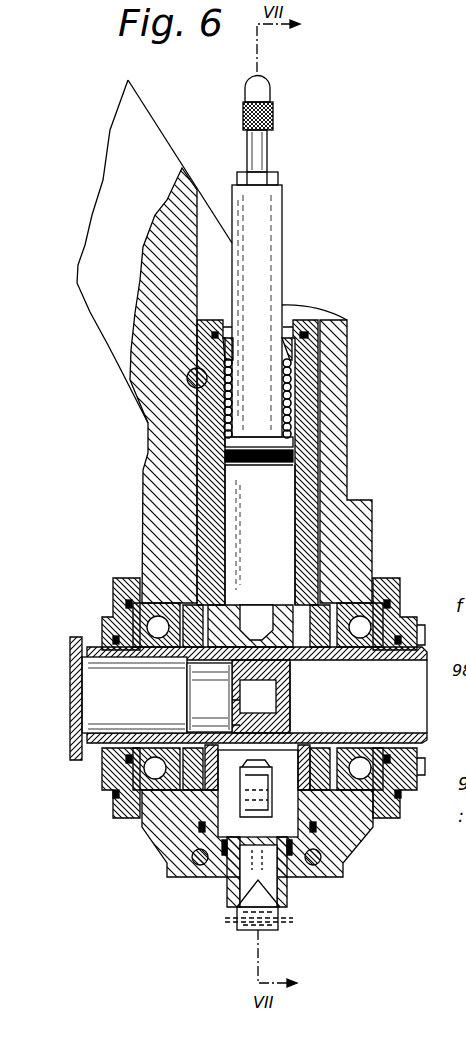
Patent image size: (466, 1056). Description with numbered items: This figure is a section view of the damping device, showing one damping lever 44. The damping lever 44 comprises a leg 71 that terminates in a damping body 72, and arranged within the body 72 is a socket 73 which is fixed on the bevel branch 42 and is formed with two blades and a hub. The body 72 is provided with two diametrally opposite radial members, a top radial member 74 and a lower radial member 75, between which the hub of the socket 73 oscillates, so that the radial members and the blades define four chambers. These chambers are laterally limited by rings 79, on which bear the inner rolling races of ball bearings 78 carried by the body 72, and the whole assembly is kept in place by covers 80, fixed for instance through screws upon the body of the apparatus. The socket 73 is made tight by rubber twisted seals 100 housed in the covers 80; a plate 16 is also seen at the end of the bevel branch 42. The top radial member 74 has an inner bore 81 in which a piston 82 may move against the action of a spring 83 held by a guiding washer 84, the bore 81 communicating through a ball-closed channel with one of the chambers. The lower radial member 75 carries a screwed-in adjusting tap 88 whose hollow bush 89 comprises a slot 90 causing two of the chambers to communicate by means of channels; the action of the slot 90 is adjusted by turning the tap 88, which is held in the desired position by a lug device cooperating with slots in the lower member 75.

The plate 16 is at (70, 697).
The bevel branch 42 is at (117, 687).
The damping lever 44 is at (100, 479).
The leg 71 is at (147, 130).
The damping body 72 is at (345, 492).
The socket 73 is at (407, 662).
The top radial member 74 is at (313, 383).
The lower radial member 75 is at (307, 870).
The ball bearings 78 is at (380, 580).
The rings 79 is at (222, 605).
The covers 80 is at (118, 578).
The inner bore 81 is at (251, 556).
The piston 82 is at (262, 255).
The spring 83 is at (285, 400).
The guiding washer 84 is at (306, 345).
The adjusting tap 88 is at (283, 893).
The hollow bush 89 is at (227, 745).
The slot 90 is at (310, 740).
The rubber twisted seals 100 is at (113, 780).